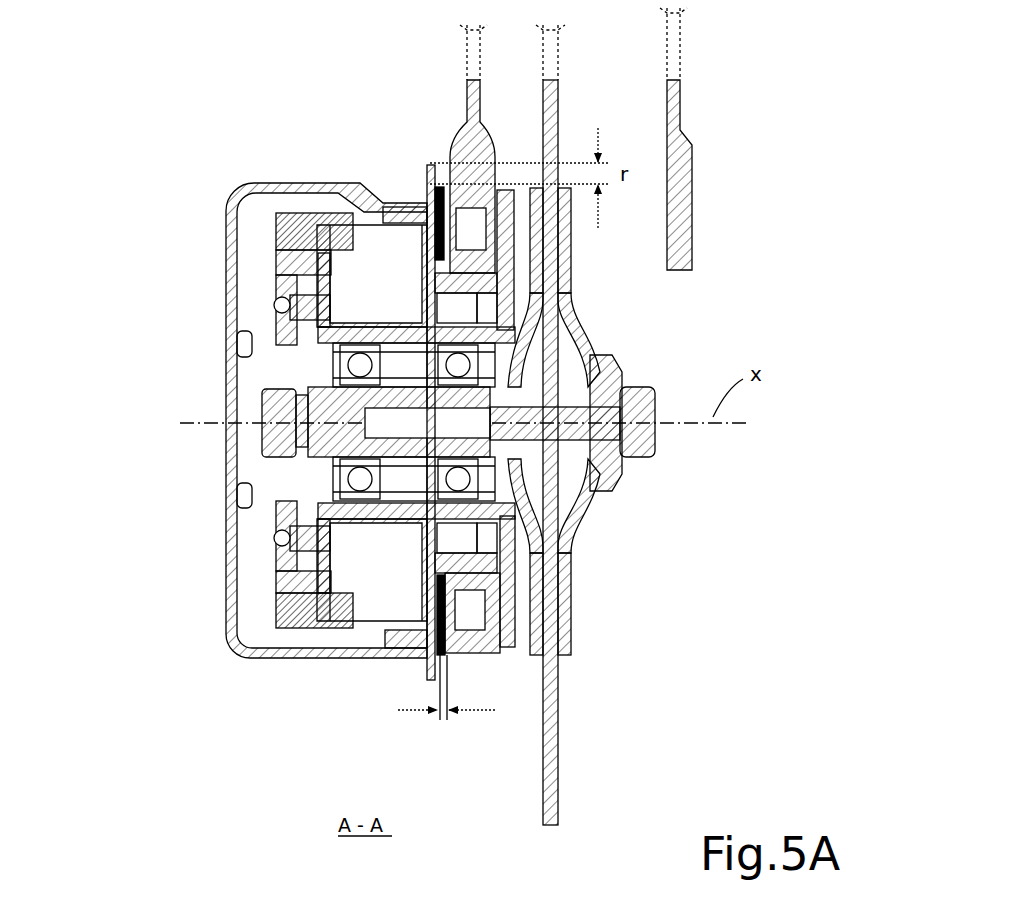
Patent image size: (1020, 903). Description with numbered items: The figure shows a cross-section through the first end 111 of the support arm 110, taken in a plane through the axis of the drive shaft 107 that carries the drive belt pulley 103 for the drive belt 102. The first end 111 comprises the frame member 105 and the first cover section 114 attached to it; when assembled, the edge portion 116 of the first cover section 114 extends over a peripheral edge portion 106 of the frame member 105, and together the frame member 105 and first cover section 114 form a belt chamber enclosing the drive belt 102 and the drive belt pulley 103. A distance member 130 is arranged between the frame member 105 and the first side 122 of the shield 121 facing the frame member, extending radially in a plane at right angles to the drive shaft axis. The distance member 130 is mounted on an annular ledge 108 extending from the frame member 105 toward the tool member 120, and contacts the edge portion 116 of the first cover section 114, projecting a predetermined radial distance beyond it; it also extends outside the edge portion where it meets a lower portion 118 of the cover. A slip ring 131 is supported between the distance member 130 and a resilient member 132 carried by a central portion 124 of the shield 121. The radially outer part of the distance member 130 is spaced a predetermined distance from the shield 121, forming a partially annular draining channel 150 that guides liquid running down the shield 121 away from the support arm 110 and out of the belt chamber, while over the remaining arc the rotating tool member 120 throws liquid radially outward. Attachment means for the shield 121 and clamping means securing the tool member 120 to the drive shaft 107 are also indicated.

The support arm 110 is at (208, 58).
The first cover section 114 is at (225, 265).
The edge portion 116 is at (427, 175).
The lower portion 118 is at (318, 656).
The drive shaft 107 is at (232, 447).
The first end 111 is at (178, 407).
The peripheral edge portion 106 is at (382, 205).
The frame member 105 is at (407, 272).
The annular ledge 108 is at (418, 548).
The drive belt pulley 103 is at (267, 577).
The drive belt 102 is at (310, 633).
The distance member 130 is at (432, 163).
The draining channel 150 is at (440, 145).
The first side 122 is at (450, 110).
The resilient member 132 is at (505, 612).
The slip ring 131 is at (487, 660).
The tool member 120 is at (562, 730).
The central portion 124 is at (568, 575).
The shield 121 is at (690, 160).